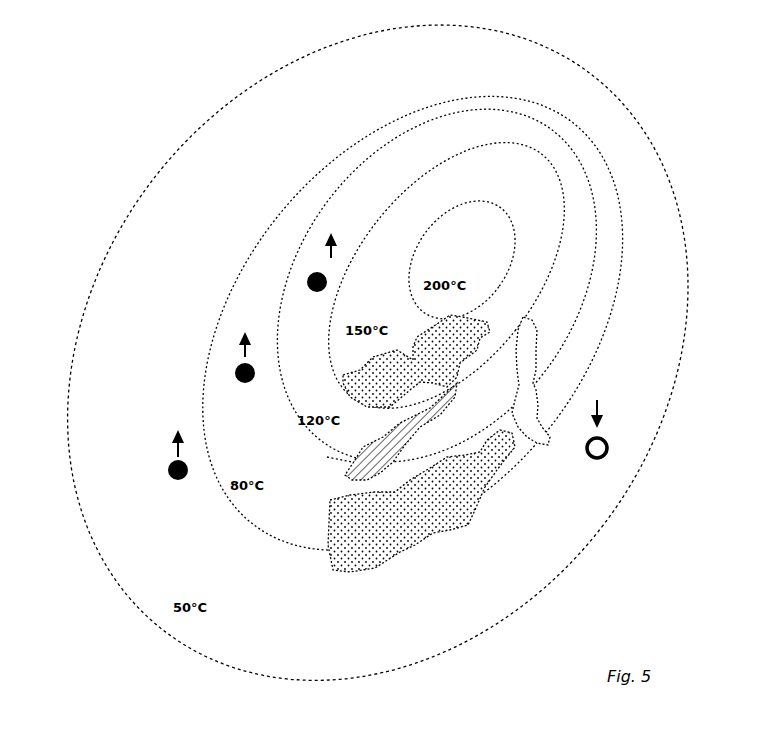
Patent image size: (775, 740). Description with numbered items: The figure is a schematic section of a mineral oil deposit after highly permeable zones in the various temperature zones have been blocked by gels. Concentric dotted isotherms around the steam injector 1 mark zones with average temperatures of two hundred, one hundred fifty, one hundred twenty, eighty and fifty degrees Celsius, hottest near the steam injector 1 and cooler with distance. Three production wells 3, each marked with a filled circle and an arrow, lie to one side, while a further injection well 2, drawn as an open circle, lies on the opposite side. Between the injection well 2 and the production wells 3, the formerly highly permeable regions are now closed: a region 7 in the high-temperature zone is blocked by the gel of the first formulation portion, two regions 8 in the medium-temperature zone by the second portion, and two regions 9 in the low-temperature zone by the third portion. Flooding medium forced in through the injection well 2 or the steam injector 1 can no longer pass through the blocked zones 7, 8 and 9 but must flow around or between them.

The steam injector 1 is at (387, 370).
The injection well 2 is at (612, 445).
The production wells 3 is at (305, 280).
The region in the high-temperature zone 7 is at (492, 327).
The regions in the medium-temperature zone 8 is at (440, 422).
The regions in the low-temperature zone 9 is at (478, 516).